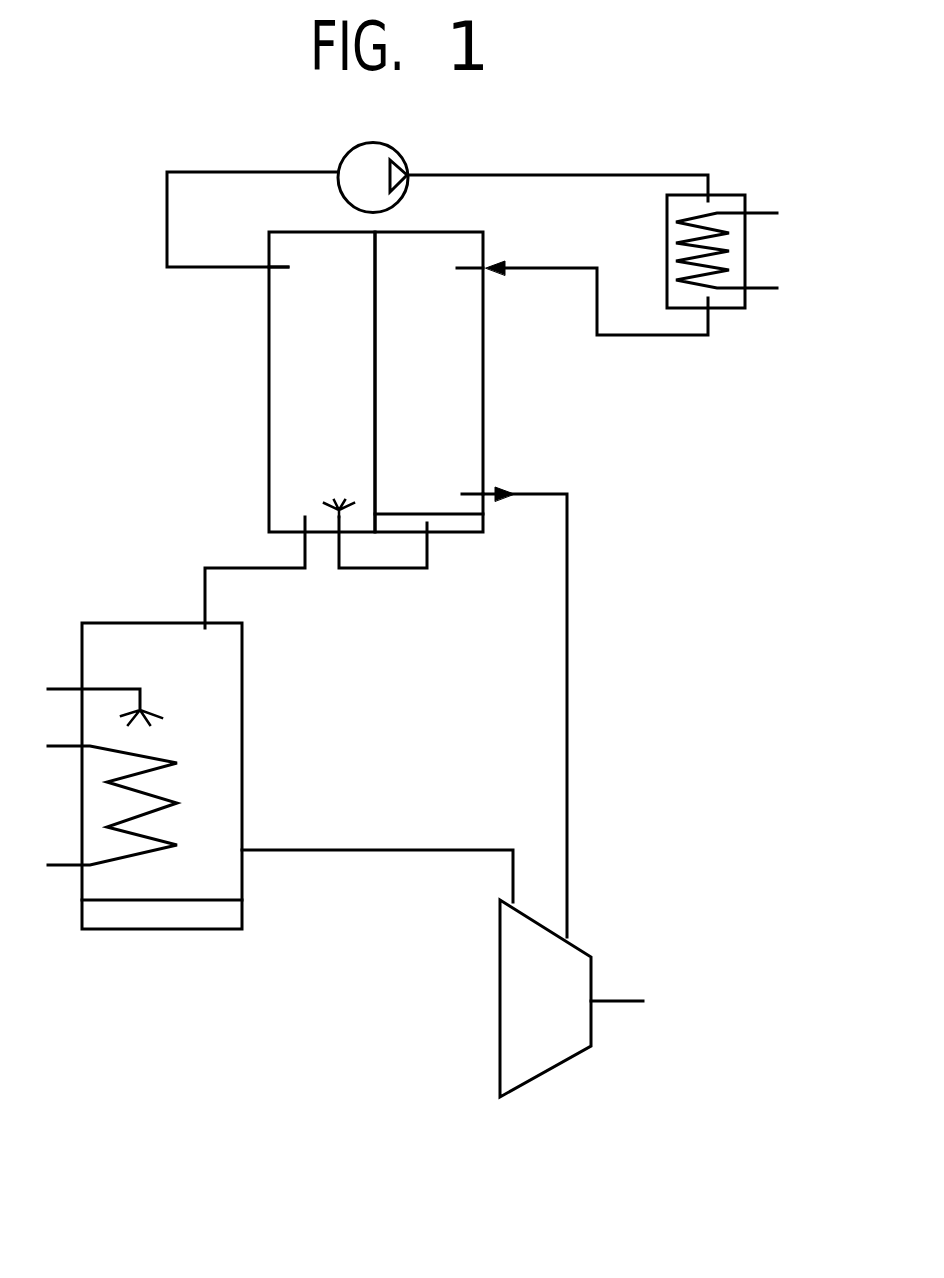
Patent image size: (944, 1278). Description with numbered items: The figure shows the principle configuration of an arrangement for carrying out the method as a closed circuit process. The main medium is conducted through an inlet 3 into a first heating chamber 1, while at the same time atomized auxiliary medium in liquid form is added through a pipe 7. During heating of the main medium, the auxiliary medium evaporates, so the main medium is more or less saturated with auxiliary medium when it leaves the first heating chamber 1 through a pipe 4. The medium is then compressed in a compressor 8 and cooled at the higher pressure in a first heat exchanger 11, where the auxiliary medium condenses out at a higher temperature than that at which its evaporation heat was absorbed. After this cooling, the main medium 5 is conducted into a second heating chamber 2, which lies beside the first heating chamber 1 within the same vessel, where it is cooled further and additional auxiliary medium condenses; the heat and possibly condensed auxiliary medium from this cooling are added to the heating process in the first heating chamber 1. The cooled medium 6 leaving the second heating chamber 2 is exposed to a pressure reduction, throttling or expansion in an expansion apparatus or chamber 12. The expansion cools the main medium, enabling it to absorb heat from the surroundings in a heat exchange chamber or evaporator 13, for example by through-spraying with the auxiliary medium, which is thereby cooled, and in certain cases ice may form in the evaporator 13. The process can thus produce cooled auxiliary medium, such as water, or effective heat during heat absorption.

The first heating chamber 1 is at (330, 401).
The second heating chamber 2 is at (440, 401).
The inlet 3 is at (223, 568).
The pipe 4 is at (195, 265).
The main medium 5 is at (535, 267).
The cooled medium 6 is at (518, 492).
The pipe 7 is at (372, 570).
The compressor 8 is at (388, 143).
The first heat exchanger 11 is at (745, 269).
The expansion apparatus or chamber 12 is at (592, 963).
The heat exchange chamber or evaporator 13 is at (244, 752).